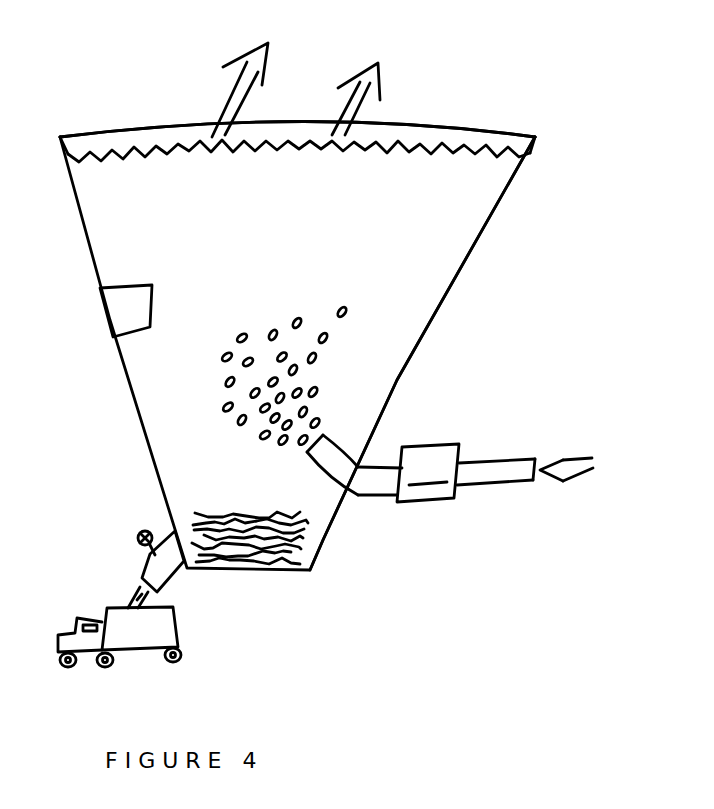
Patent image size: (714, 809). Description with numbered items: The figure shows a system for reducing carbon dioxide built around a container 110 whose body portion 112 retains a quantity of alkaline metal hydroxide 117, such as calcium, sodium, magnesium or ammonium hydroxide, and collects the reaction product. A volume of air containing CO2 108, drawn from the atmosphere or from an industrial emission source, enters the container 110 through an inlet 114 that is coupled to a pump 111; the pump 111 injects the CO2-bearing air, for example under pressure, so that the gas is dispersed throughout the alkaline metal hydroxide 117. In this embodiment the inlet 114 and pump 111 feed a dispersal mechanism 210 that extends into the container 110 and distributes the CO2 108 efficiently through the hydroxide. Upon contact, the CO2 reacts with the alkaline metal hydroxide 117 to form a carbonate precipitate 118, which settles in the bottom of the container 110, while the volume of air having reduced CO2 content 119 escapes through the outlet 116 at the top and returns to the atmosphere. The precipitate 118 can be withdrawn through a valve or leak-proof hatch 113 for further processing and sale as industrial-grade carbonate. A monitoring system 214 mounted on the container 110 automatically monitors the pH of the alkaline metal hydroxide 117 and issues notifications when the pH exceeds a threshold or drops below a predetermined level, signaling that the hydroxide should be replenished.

The container 110 is at (313, 273).
The body portion 112 is at (500, 197).
The outlet 116 is at (88, 135).
The alkaline metal hydroxide 117 is at (285, 152).
The volume of air having reduced CO2 content 119 is at (360, 75).
The monitoring system 214 is at (127, 311).
The air containing CO2 108 is at (228, 352).
The dispersal mechanism 210 is at (335, 435).
The pump 111 is at (428, 473).
The inlet 114 is at (530, 458).
The precipitate 118 is at (222, 513).
The valve or leak-proof hatch 113 is at (152, 557).